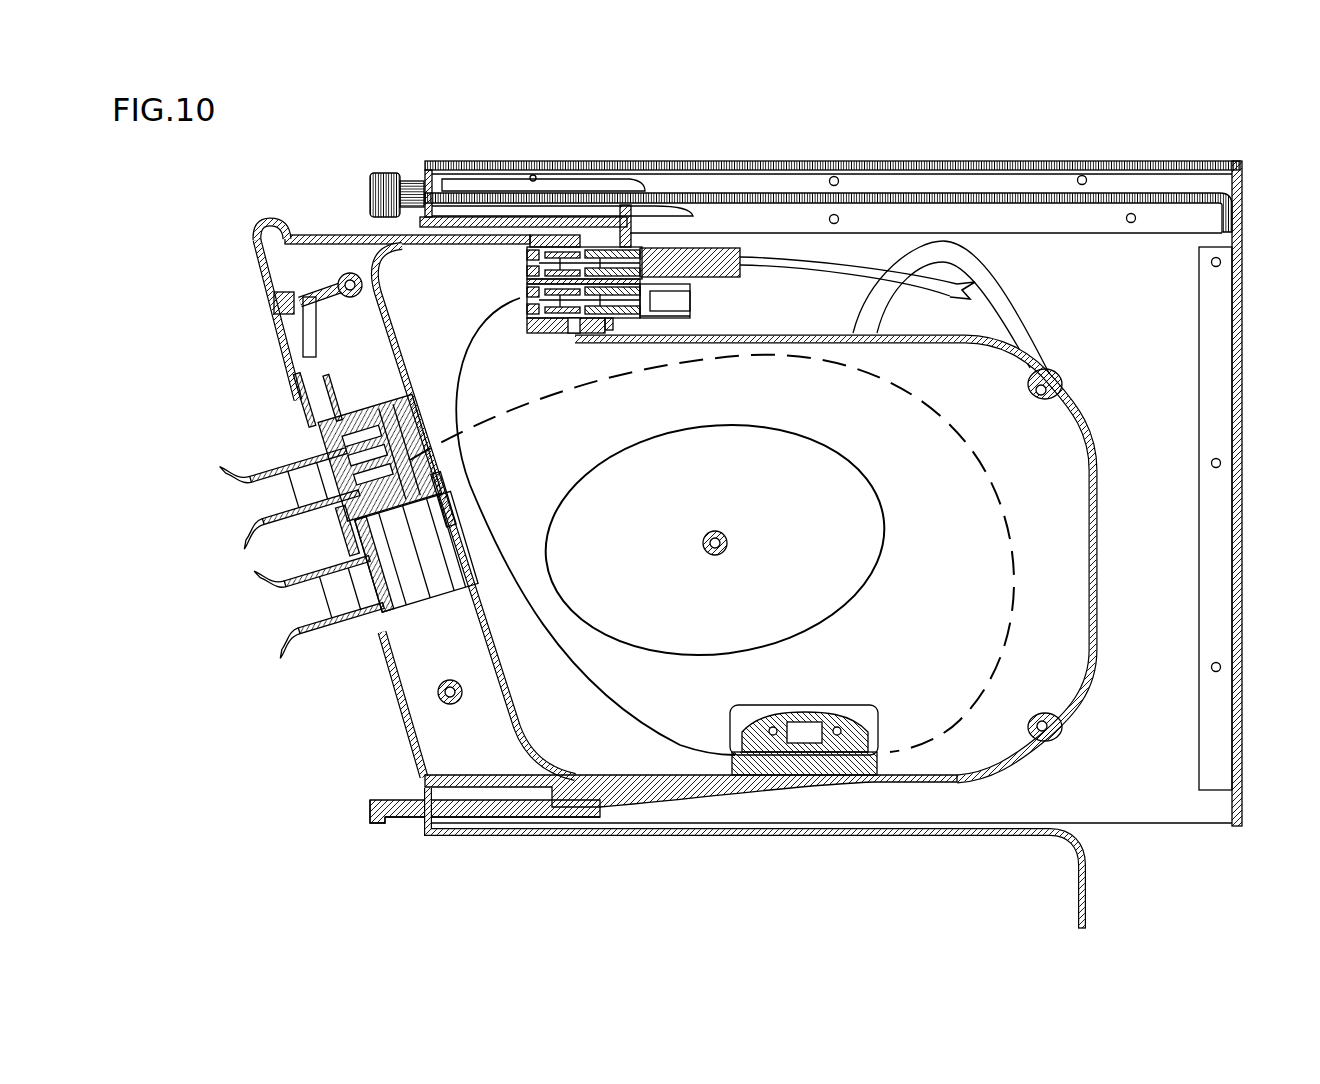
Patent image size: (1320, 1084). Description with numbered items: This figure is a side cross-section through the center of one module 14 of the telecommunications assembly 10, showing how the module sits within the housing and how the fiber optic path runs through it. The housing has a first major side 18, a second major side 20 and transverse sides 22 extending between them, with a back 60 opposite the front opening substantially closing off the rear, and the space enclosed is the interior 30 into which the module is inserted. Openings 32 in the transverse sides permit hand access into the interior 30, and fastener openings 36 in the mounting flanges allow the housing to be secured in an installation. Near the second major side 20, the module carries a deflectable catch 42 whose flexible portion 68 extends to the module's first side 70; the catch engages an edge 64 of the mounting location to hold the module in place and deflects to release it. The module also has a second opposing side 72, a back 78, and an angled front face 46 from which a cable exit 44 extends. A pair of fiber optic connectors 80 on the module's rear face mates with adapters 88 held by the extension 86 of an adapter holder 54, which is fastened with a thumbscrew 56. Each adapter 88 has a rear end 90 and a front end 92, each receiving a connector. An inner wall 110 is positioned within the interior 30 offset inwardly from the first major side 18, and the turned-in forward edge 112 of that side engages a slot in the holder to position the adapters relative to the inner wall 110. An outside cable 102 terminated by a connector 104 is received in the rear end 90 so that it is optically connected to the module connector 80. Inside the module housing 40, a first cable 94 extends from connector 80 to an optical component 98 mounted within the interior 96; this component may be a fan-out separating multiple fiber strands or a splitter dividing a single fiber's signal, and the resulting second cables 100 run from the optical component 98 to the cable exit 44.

The telecommunications assembly 10 is at (490, 138).
The module 14 is at (394, 721).
The first major side 18 is at (1110, 161).
The second major side 20 is at (1172, 829).
The transverse sides 22 is at (1094, 305).
The interior 30 is at (1126, 370).
The openings 32 is at (985, 300).
The fastener openings 36 is at (1093, 910).
The module housing 40 is at (1086, 727).
The catch 42 is at (370, 811).
The cable exit 44 is at (246, 534).
The front face 46 is at (386, 670).
The adapter holder 54 is at (632, 222).
The thumbscrew 56 is at (383, 178).
The back 60 is at (1244, 624).
The edge 64 is at (425, 812).
The flexible portion 68 is at (503, 818).
The first side 70 is at (953, 782).
The second opposing side 72 is at (321, 237).
The back 78 is at (1100, 545).
The fiber optic connectors 80 is at (592, 322).
The extension 86 is at (632, 234).
The adapters 88 is at (685, 300).
The rear end 90 is at (690, 316).
The front end 92 is at (604, 247).
The first cable 94 is at (593, 488).
The interior 96 is at (779, 566).
The optical component 98 is at (736, 758).
The second cables 100 is at (955, 441).
The outside cable 102 is at (822, 268).
The connector 104 is at (737, 260).
The inner wall 110 is at (1187, 196).
The turned-in forward edge 112 is at (424, 170).